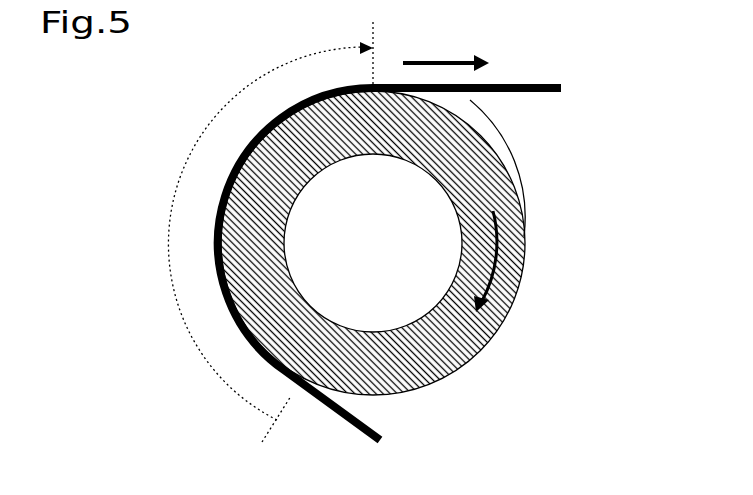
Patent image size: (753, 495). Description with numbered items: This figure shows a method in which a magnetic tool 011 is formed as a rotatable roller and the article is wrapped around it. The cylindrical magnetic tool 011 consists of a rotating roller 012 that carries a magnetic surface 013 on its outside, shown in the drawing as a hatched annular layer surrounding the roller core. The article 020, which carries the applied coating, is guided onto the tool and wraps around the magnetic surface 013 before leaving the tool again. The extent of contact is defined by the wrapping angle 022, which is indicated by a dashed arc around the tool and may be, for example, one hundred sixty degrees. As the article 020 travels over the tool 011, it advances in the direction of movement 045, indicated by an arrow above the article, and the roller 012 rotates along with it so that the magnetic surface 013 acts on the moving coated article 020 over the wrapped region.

The magnetic tool 011 is at (373, 243).
The rotating roller 012 is at (373, 243).
The magnetic surface 013 is at (452, 116).
The article 020 is at (540, 82).
The wrapping angle 022 is at (270, 232).
The direction of movement 045 is at (446, 46).